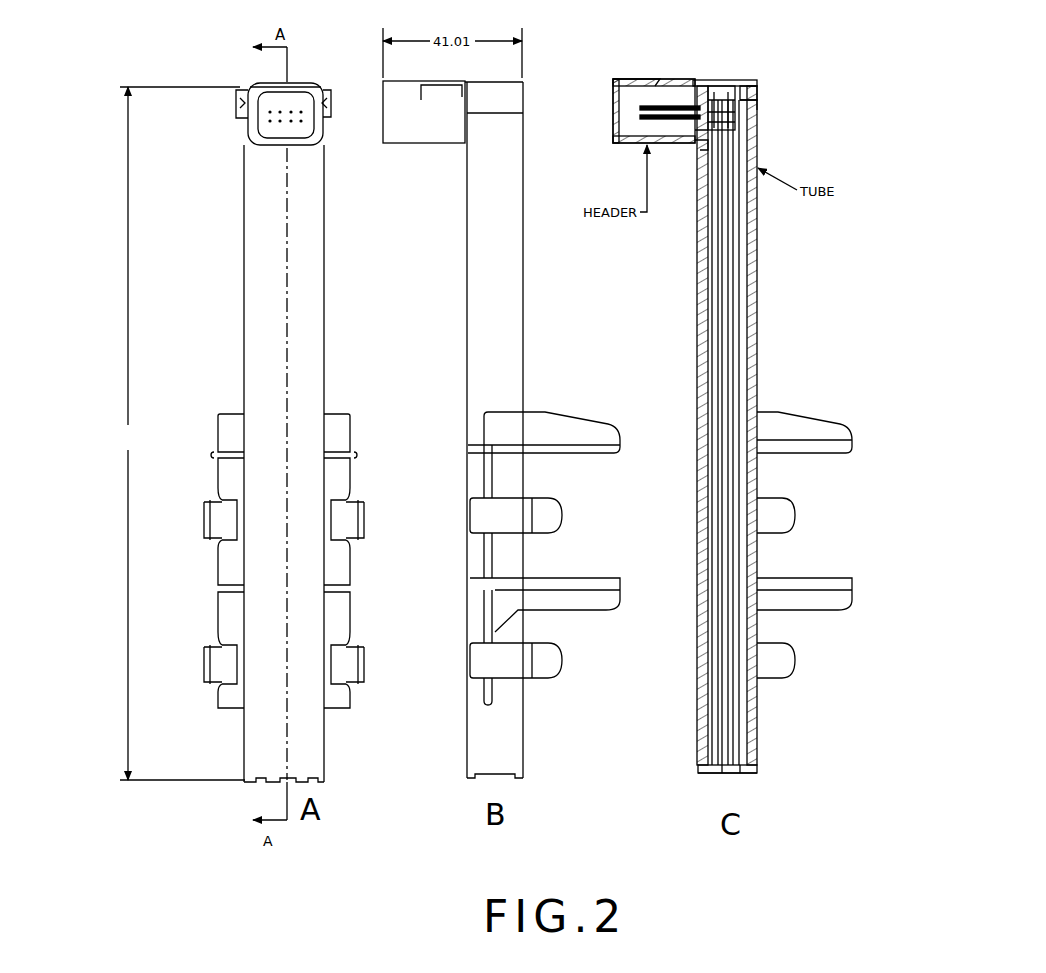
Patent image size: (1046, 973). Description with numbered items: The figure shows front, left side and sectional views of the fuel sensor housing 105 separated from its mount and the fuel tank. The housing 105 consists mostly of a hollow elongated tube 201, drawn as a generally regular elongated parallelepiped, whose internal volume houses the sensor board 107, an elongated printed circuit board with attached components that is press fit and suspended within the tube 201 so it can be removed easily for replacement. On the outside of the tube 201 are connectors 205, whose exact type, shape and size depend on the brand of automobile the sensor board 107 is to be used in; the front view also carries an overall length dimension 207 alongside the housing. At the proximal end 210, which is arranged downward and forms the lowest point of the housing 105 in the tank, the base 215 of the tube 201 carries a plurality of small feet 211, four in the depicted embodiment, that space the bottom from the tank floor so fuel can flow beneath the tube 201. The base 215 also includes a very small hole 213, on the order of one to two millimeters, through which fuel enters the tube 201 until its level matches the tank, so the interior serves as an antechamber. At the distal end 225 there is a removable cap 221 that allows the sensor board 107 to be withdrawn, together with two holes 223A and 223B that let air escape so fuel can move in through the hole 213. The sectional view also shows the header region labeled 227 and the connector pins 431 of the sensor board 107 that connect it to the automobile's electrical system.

In FIG. 2A, the housing 105 is at (325, 272).
In FIG. 2B, the housing 105 is at (523, 260).
In FIG. 2C, the housing 105 is at (757, 136).
In FIG. 2C, the sensor board 107 is at (738, 356).
In FIG. 2A, the hollow elongated tube 201 is at (325, 331).
In FIG. 2B, the hollow elongated tube 201 is at (523, 331).
In FIG. 2C, the hollow elongated tube 201 is at (758, 273).
In FIG. 2A, the connectors 205 is at (364, 511).
In FIG. 2B, the connectors 205 is at (580, 577).
In FIG. 2C, the connectors 205 is at (820, 577).
In FIG. 2A, the overall length dimension 207 is at (180, 433).
In FIG. 2A, the proximal end 210 is at (296, 784).
In FIG. 2B, the proximal end 210 is at (500, 780).
In FIG. 2C, the proximal end 210 is at (700, 748).
In FIG. 2C, the feet 211 is at (750, 775).
In FIG. 2C, the hole 213 is at (740, 772).
In FIG. 2C, the base 215 is at (700, 776).
In FIG. 2C, the cap 221 is at (745, 76).
In FIG. 2A, the hole 223A is at (300, 146).
In FIG. 2C, the hole 223A is at (705, 143).
In FIG. 2C, the hole 223B is at (752, 97).
In FIG. 2C, the distal end 225 is at (718, 82).
In FIG. 2C, the header housing 227 is at (637, 80).
In FIG. 2C, the connector pins 431 is at (632, 118).